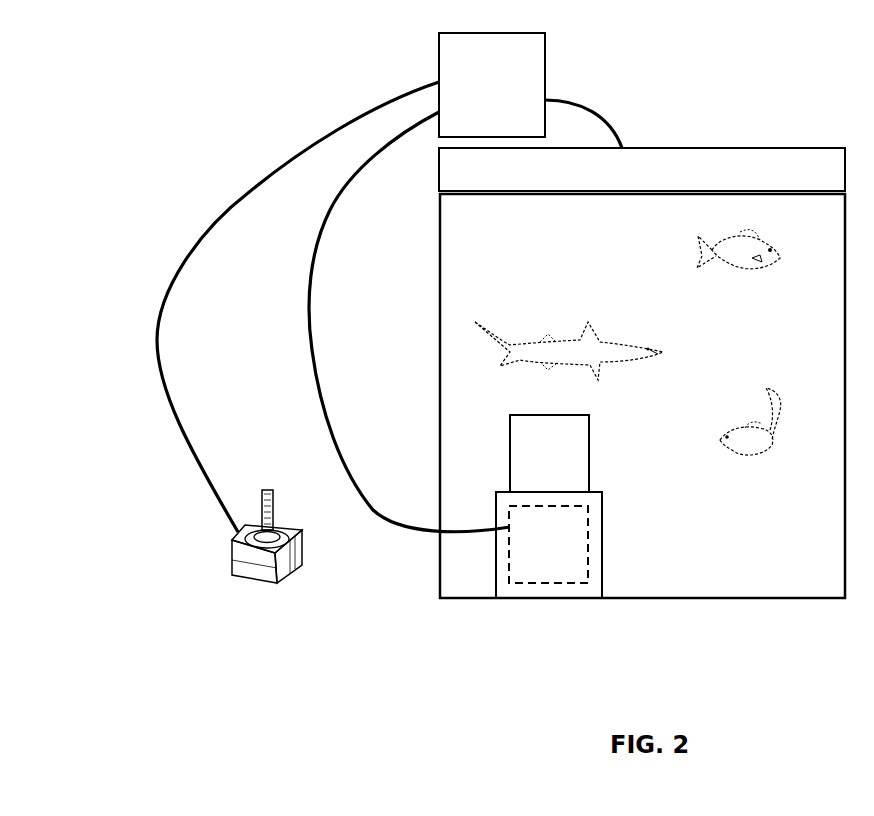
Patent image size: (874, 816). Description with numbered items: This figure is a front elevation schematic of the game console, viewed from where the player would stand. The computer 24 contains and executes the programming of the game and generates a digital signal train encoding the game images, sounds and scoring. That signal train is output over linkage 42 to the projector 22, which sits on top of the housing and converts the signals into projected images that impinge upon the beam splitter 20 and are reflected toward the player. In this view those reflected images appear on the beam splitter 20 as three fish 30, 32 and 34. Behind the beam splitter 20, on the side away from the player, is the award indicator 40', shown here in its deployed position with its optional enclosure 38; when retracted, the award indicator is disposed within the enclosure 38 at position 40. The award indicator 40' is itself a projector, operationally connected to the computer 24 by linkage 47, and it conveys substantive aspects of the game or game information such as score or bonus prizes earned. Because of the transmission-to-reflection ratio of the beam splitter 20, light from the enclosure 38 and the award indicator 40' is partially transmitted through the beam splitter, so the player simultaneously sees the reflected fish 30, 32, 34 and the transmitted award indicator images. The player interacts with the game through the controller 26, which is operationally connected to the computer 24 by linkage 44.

The beam splitter 20 is at (642, 396).
The projector 22 is at (642, 169).
The computer 24 is at (492, 85).
The controller 26 is at (262, 575).
The fish image 30 is at (755, 270).
The fish image 32 is at (620, 365).
The fish image 34 is at (758, 455).
The enclosure 38 is at (496, 568).
The award indicator (retracted position) 40 is at (548, 575).
The award indicator (deployed position) 40' is at (487, 436).
The linkage 42 is at (613, 127).
The linkage 44 is at (247, 193).
The linkage 47 is at (310, 348).